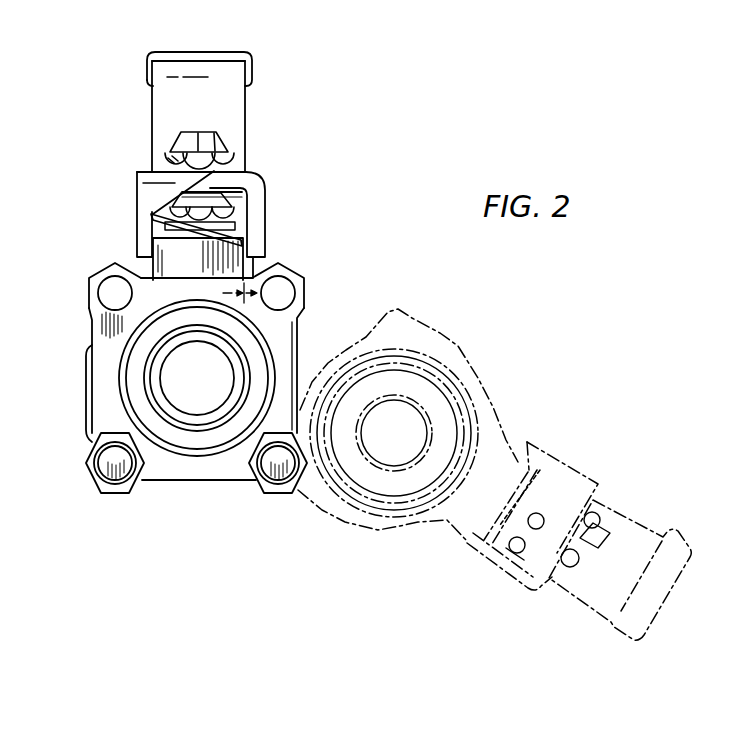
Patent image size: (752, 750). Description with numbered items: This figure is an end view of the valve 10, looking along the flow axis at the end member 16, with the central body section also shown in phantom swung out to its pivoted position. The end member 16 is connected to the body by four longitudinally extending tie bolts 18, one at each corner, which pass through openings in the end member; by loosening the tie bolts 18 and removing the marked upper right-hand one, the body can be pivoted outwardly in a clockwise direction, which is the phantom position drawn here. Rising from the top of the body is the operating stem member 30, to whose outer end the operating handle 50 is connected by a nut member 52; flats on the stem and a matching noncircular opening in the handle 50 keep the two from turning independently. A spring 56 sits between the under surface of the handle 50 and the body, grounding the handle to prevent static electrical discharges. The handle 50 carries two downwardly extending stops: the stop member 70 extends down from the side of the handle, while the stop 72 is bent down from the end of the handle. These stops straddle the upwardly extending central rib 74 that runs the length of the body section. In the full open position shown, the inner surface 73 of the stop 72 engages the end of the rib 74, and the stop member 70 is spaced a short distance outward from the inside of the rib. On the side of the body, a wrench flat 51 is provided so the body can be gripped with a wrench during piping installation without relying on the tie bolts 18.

The valve 10 is at (364, 188).
The end member 16 is at (183, 509).
The tie bolts 18 is at (99, 296).
The operating stem member 30 is at (196, 131).
The operating handle 50 is at (246, 106).
The wrench flat 51 is at (85, 402).
The nut member 52 is at (226, 158).
The spring 56 is at (238, 233).
The stop member 70 is at (258, 195).
The stop 72 is at (145, 217).
The inner surface 73 is at (154, 246).
The central rib 74 is at (254, 276).